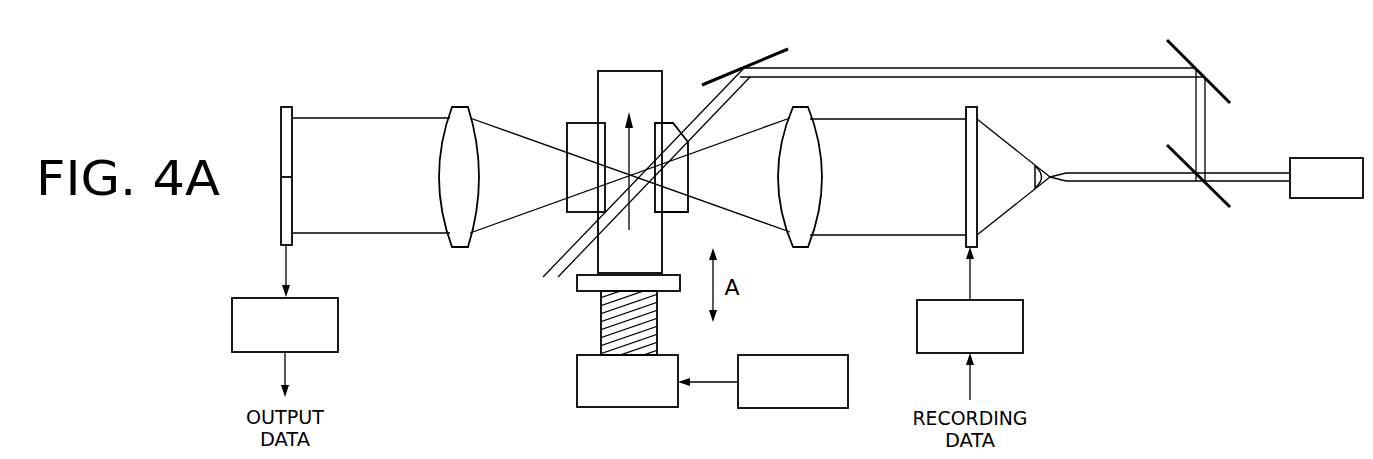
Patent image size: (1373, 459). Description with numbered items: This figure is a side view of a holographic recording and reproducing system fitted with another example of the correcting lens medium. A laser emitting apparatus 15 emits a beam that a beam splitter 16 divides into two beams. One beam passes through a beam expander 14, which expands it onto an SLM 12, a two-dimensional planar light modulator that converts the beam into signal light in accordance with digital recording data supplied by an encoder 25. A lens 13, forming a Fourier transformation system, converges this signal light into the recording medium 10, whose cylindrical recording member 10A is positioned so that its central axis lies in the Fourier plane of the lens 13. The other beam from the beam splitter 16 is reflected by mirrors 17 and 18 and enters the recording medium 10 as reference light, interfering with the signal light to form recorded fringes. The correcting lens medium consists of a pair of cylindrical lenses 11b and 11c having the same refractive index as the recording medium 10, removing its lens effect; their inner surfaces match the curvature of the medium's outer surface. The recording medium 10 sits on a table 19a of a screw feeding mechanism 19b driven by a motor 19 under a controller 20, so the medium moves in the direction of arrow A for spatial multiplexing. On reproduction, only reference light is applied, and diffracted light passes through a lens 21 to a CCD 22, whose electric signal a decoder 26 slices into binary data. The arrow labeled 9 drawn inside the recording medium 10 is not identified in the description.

The moving direction arrow of recording medium 9 is at (628, 142).
The recording medium 10 is at (639, 70).
The recording member 10A is at (620, 80).
The lens 11b is at (577, 210).
The lens 11c is at (678, 212).
The SLM 12 is at (978, 110).
The lens 13 is at (800, 247).
The beam expander 14 is at (1045, 185).
The laser emitting apparatus 15 is at (1323, 198).
The beam splitter 16 is at (1220, 197).
The mirror 17 is at (1222, 93).
The mirror 18 is at (773, 55).
The motor 19 is at (623, 407).
The table 19a is at (577, 283).
The screw feeding mechanism 19b is at (601, 325).
The controller 20 is at (790, 408).
The lens 21 is at (459, 107).
The CCD 22 is at (288, 107).
The encoder 25 is at (1023, 327).
The decoder 26 is at (338, 328).